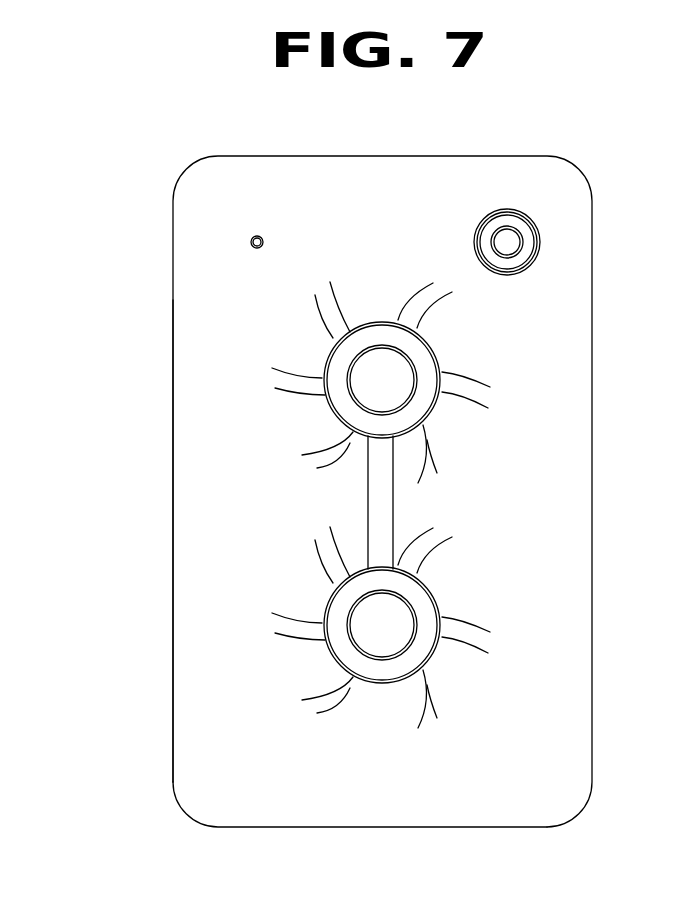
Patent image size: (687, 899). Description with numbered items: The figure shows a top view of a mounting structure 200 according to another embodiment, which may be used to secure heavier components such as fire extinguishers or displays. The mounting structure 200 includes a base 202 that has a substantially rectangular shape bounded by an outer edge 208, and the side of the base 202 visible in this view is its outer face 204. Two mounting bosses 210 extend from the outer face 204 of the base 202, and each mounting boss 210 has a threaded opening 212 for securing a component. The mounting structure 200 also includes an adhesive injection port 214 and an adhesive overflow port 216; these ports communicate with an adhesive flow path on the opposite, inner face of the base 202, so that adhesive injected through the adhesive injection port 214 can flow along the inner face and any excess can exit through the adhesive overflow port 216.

The mounting structure 200 is at (170, 161).
The base 202 is at (200, 292).
The outer face 204 is at (383, 792).
The outer edge 208 is at (173, 623).
The mounting boss 210 is at (418, 352).
The threaded opening 212 is at (412, 395).
The adhesive injection port 214 is at (507, 241).
The adhesive overflow port 216 is at (252, 242).